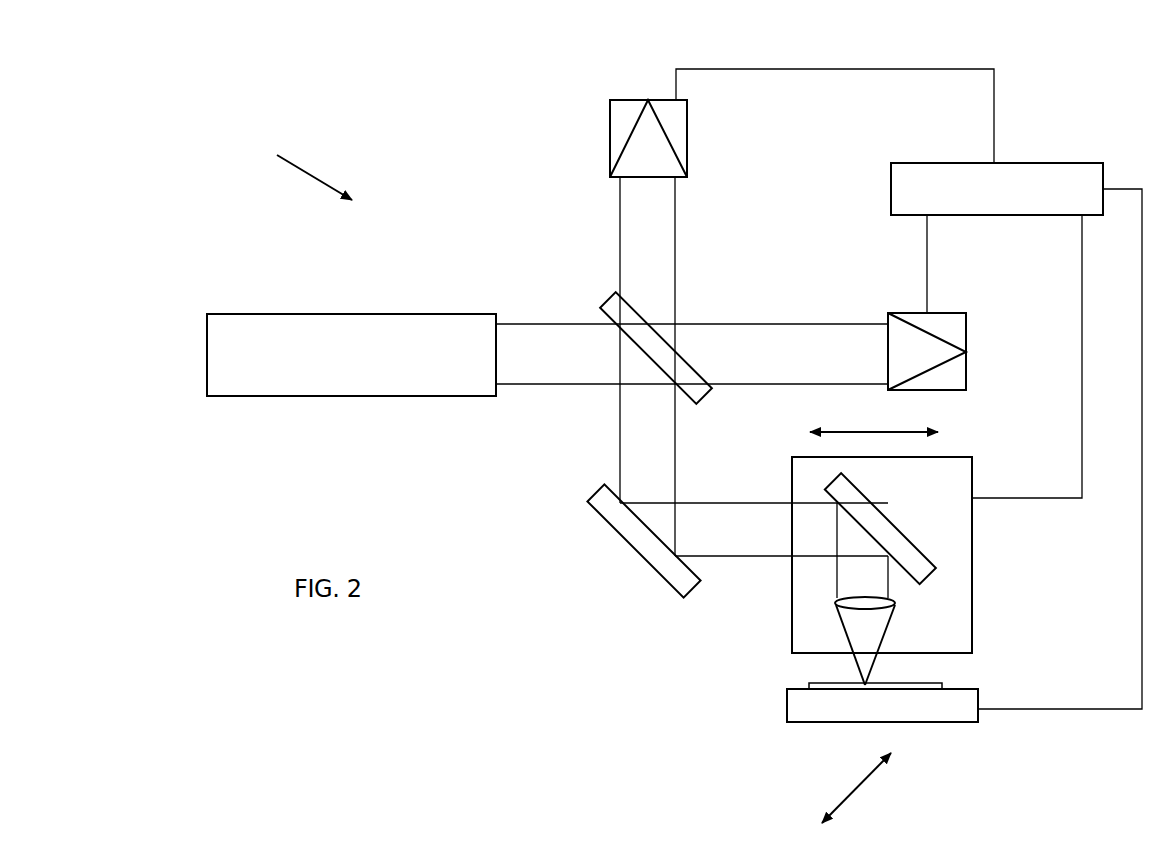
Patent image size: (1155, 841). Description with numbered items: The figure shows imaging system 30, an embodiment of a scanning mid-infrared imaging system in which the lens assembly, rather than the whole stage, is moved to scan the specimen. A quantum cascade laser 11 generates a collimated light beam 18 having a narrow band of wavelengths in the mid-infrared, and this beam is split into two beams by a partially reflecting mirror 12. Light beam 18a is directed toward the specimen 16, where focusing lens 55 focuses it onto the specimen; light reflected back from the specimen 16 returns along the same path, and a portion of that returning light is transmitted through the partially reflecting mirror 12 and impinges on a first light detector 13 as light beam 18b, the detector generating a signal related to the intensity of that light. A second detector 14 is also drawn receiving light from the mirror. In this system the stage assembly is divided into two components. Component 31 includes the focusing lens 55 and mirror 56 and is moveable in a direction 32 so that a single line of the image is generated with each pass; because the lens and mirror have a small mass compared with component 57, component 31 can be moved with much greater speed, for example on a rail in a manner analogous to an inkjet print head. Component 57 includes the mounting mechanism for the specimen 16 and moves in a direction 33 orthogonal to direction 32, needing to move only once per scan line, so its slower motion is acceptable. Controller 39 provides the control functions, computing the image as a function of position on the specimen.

The imaging system 30 is at (298, 162).
The quantum cascade laser 11 is at (350, 396).
The collimated light beam 18 is at (543, 328).
The light beam 18a is at (620, 442).
The light beam 18b is at (668, 240).
The partially reflecting mirror 12 is at (700, 400).
The first light detector 13 is at (687, 140).
The second detector 14 is at (966, 375).
The controller 39 is at (990, 215).
The direction 32 is at (866, 427).
The component 31 is at (972, 560).
The mirror 56 is at (862, 498).
The focusing lens 55 is at (895, 605).
The specimen 16 is at (813, 683).
The component 57 is at (788, 700).
The direction 33 is at (855, 788).